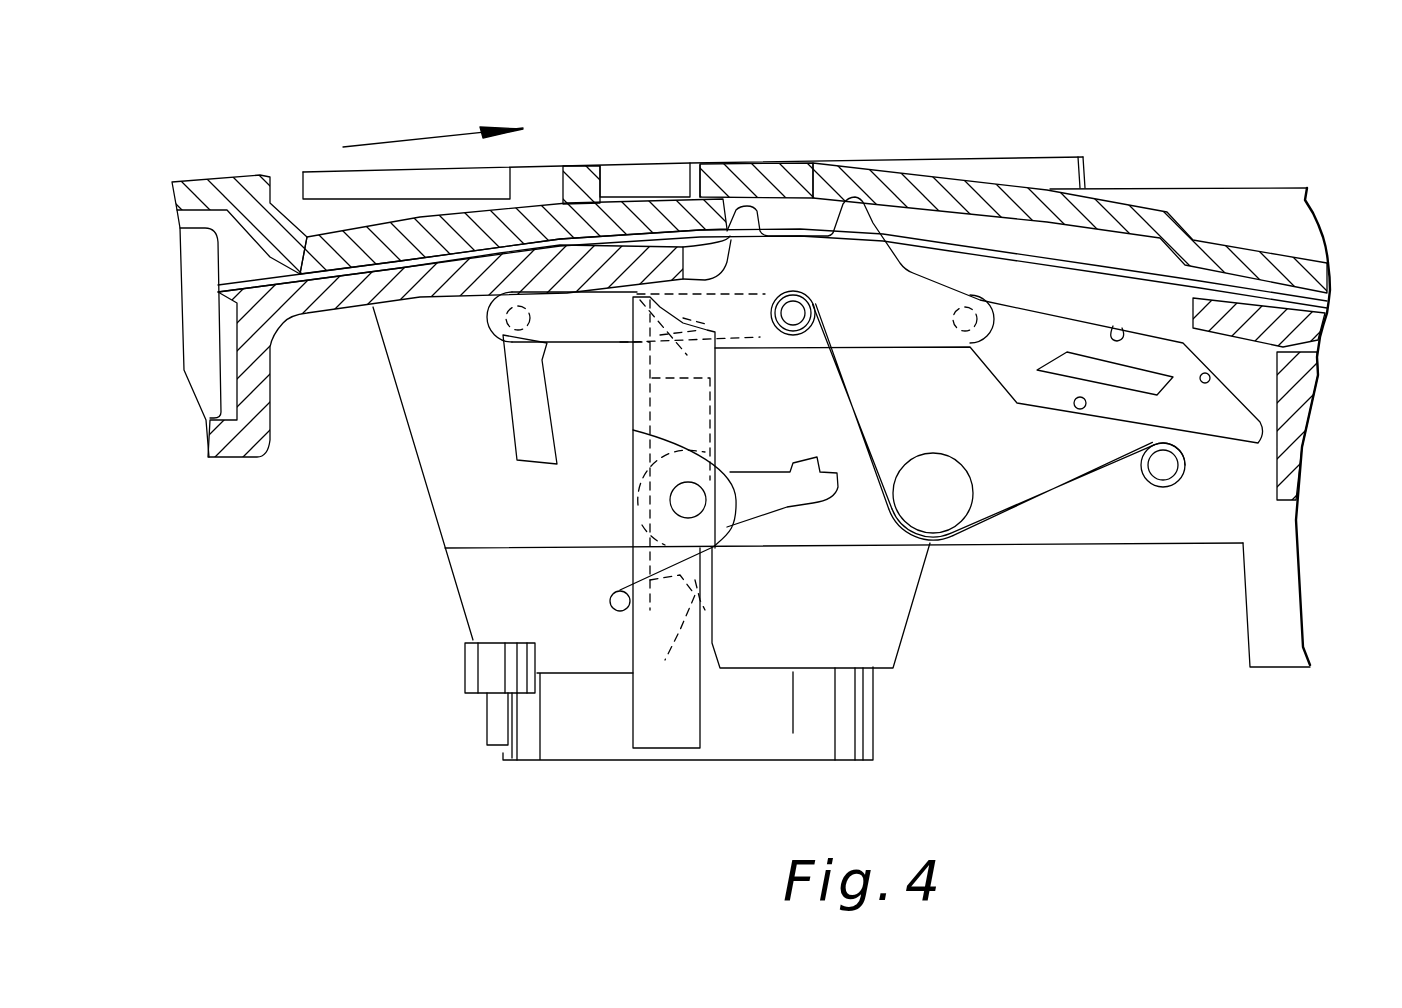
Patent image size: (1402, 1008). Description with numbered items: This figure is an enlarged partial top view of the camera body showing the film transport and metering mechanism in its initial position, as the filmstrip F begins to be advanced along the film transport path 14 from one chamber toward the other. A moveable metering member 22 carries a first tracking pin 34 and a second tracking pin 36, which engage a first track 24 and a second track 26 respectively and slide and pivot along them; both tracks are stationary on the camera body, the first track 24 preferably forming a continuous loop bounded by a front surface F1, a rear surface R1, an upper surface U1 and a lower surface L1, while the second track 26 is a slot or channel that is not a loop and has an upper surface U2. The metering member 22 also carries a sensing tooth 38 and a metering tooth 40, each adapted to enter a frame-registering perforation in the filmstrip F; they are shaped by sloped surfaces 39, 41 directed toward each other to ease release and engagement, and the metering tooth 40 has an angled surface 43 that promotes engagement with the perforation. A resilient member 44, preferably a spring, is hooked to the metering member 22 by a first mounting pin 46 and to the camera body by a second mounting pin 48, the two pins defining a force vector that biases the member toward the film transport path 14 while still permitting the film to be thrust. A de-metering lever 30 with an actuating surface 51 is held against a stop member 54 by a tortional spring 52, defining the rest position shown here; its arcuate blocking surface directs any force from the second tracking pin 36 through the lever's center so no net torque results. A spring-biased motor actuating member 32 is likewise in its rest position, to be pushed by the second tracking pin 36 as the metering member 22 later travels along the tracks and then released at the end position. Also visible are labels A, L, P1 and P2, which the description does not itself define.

The film transport path 14 is at (1040, 267).
The metering member 22 is at (900, 332).
The first track 24 is at (1283, 400).
The second track 26 is at (513, 467).
The de-metering lever 30 is at (673, 750).
The motor actuating member 32 is at (780, 510).
The first tracking pin 34 is at (953, 317).
The second tracking pin 36 is at (507, 315).
The sensing tooth 38 is at (730, 200).
The sloped surface 39 is at (715, 230).
The metering tooth 40 is at (867, 207).
The sloped surface 41 is at (933, 197).
The surface 43 is at (850, 205).
The resilient member 44 is at (1010, 513).
The first mounting pin 46 is at (800, 310).
The second mounting pin 48 is at (1163, 467).
The actuating surface 51 is at (632, 708).
The tortional spring 52 is at (660, 573).
The stop member 54 is at (613, 603).
The sheet feed direction arrow A is at (453, 140).
The sheet path L is at (723, 200).
The upper guide plate P1 is at (263, 253).
The lower guide plate P2 is at (363, 270).
The filmstrip F is at (220, 273).
The front surface F1 is at (1003, 383).
The lower surface L1 is at (1080, 410).
The upper surface U1 is at (1117, 337).
The upper surface U2 is at (577, 300).
The rear surface R1 is at (1283, 357).